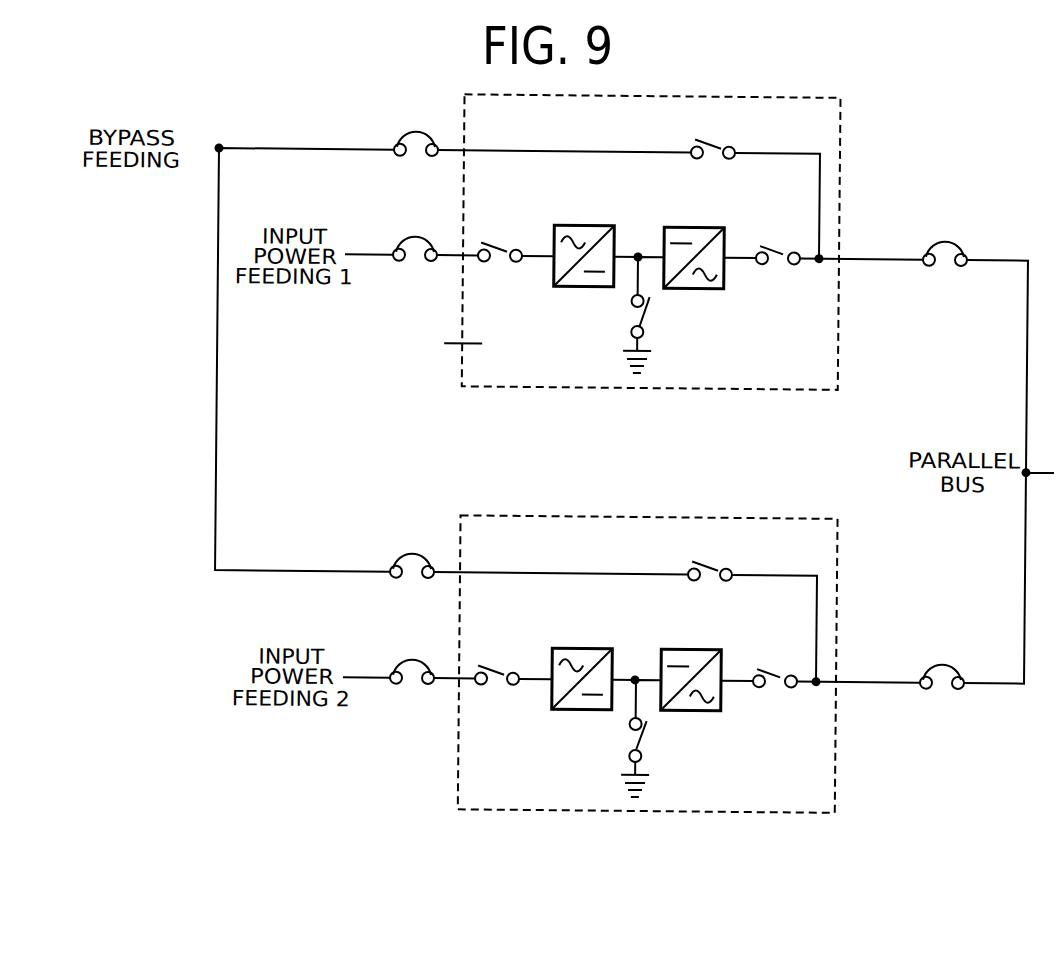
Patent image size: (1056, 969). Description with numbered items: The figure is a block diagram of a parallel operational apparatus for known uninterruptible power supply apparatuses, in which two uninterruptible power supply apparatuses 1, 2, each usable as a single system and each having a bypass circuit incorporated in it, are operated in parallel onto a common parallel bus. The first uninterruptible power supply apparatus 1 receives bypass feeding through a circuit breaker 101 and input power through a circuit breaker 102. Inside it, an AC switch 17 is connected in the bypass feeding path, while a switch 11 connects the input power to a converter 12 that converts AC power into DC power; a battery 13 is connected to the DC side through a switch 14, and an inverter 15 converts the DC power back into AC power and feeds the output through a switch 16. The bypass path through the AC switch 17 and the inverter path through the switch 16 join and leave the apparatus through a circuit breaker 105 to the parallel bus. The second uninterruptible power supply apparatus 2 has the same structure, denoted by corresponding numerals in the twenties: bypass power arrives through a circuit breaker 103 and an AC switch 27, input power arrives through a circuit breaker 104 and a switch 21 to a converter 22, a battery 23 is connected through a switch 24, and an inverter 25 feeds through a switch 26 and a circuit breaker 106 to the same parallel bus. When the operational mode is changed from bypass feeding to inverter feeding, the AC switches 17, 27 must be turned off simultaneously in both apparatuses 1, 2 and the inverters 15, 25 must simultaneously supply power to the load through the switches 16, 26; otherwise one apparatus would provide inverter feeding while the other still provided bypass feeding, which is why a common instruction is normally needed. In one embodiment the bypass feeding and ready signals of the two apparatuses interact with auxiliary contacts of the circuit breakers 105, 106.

The uninterruptible power supply apparatus 1 is at (840, 108).
The uninterruptible power supply apparatus 2 is at (841, 532).
The switch 11 is at (500, 265).
The converter 12 is at (560, 288).
The battery 13 is at (620, 358).
The switch 14 is at (651, 303).
The inverter 15 is at (716, 289).
The switch 16 is at (777, 265).
The AC switch 17 is at (712, 160).
The switch 21 is at (501, 688).
The converter 22 is at (562, 711).
The battery 23 is at (620, 783).
The switch 24 is at (652, 727).
The inverter 25 is at (716, 711).
The switch 26 is at (778, 688).
The AC switch 27 is at (711, 582).
The circuit breaker 101 is at (415, 160).
The circuit breaker 102 is at (415, 265).
The circuit breaker 103 is at (415, 582).
The circuit breaker 104 is at (416, 688).
The circuit breaker 105 is at (945, 265).
The circuit breaker 106 is at (946, 688).